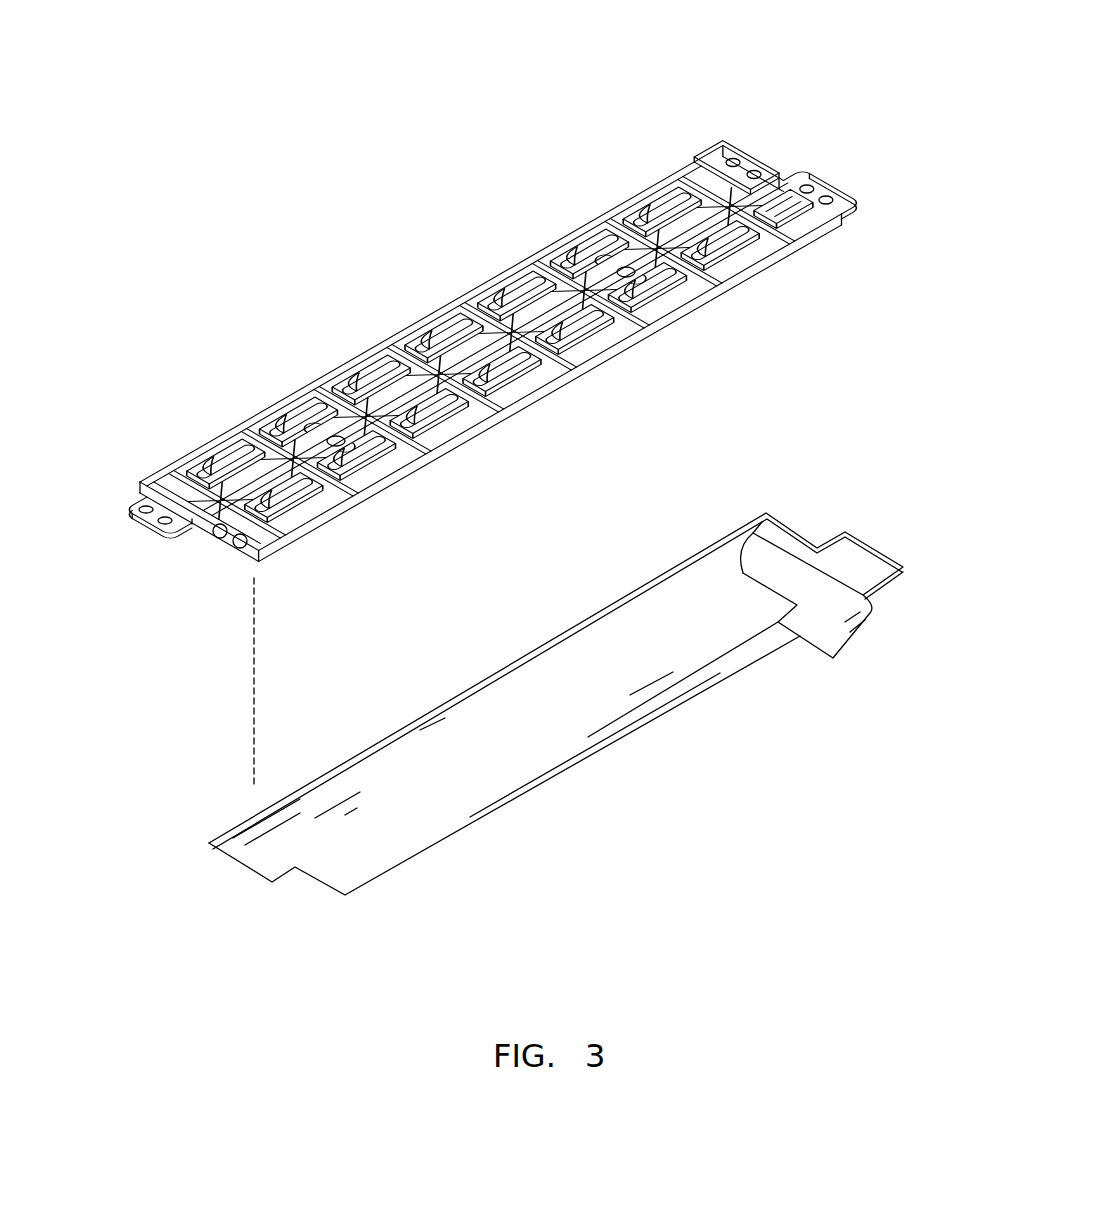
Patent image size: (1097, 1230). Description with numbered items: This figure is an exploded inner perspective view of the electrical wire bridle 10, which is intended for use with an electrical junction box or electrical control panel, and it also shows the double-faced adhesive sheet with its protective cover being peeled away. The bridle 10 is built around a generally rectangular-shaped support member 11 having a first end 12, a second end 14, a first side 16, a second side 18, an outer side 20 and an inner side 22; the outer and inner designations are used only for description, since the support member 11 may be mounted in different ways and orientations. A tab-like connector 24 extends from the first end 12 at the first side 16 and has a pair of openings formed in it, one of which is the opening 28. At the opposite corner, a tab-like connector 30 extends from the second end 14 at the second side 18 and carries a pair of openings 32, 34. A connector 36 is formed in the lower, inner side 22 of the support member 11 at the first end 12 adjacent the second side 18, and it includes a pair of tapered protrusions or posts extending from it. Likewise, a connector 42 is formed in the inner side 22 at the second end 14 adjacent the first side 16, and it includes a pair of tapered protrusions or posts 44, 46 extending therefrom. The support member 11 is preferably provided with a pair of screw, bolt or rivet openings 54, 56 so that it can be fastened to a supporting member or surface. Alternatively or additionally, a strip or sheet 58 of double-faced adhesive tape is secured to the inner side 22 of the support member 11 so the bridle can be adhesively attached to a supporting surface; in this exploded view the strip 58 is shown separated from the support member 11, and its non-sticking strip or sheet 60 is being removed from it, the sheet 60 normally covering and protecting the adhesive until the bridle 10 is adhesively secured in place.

The electrical wire bridle 10 is at (498, 401).
The support member 11 is at (350, 358).
The first end 12 is at (219, 539).
The second end 14 is at (755, 157).
The first side 16 is at (566, 178).
The second side 18 is at (481, 433).
The outer side 20 is at (142, 500).
The inner side 22 is at (572, 290).
The tab-like connector 24 is at (140, 532).
The opening 28 is at (163, 528).
The tab-like connector 30 is at (832, 174).
The opening 32 is at (809, 194).
The opening 34 is at (834, 202).
The connector 36 is at (239, 550).
The connector 42 is at (742, 153).
The tapered protrusion or post 44 is at (773, 175).
The tapered protrusion or post 46 is at (728, 170).
The screw, bolt or rivet opening 54 is at (340, 450).
The screw, bolt or rivet opening 56 is at (632, 277).
The strip or sheet of double-faced adhesive tape 58 is at (561, 663).
The non-sticking strip or sheet 60 is at (831, 632).